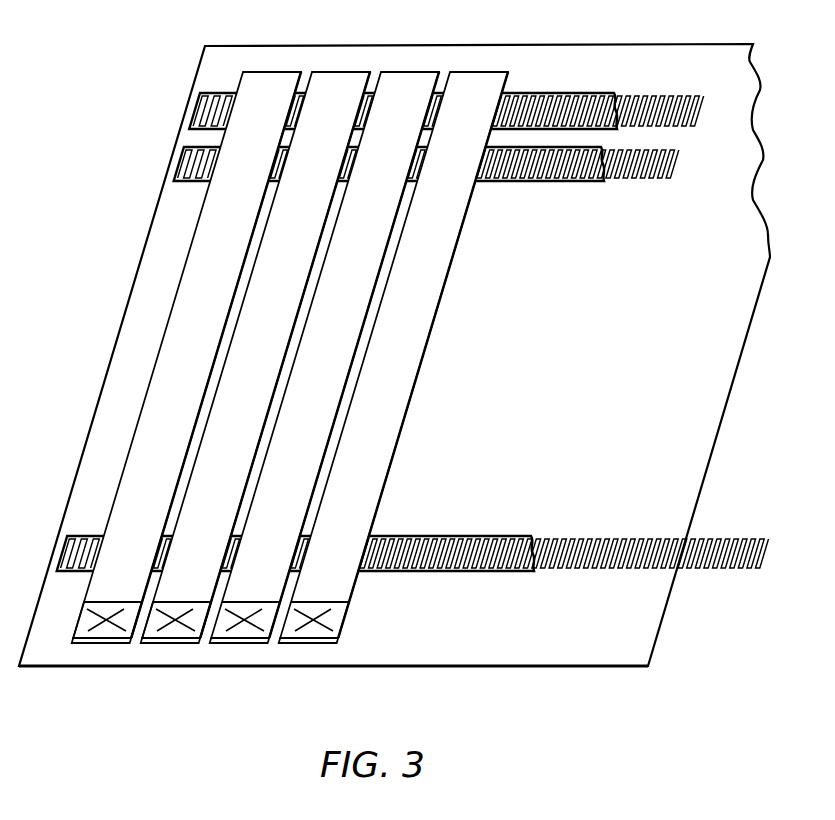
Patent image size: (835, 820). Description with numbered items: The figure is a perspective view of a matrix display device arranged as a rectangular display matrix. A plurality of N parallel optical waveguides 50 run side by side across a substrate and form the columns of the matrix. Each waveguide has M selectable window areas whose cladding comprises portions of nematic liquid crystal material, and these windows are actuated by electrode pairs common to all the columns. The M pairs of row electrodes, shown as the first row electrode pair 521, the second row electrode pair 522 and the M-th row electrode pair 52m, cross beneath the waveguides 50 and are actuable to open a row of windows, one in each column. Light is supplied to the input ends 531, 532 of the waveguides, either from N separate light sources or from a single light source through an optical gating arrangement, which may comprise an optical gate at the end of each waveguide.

The parallel optical waveguides 50 is at (335, 72).
The row electrode pair 521 is at (603, 113).
The row electrode pair 522 is at (590, 167).
The row electrode pair 52m is at (523, 557).
The input end of waveguide 531 is at (95, 648).
The input end of waveguide 532 is at (150, 648).